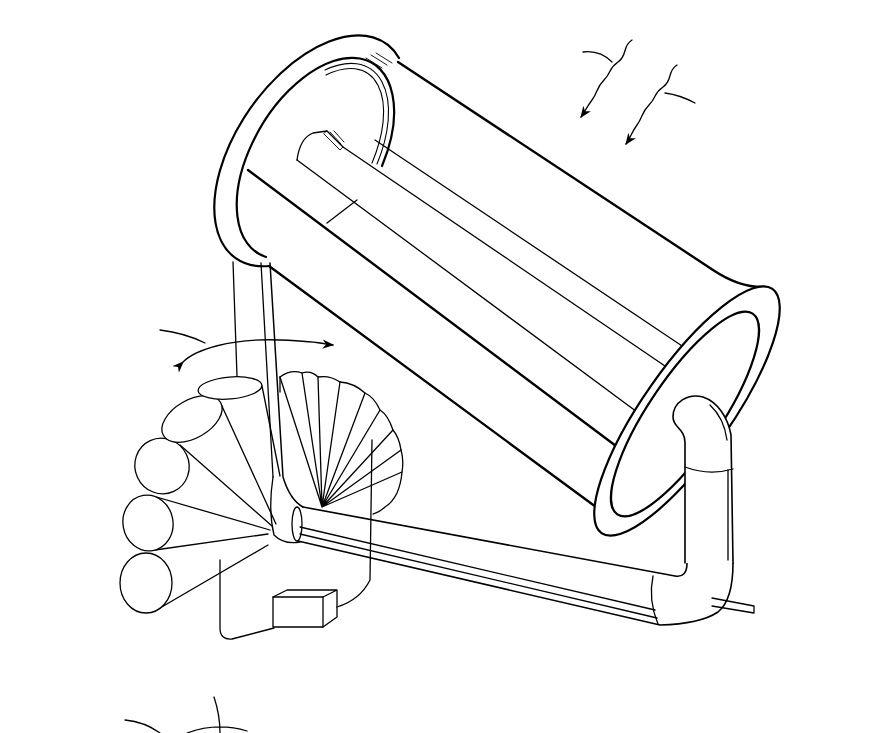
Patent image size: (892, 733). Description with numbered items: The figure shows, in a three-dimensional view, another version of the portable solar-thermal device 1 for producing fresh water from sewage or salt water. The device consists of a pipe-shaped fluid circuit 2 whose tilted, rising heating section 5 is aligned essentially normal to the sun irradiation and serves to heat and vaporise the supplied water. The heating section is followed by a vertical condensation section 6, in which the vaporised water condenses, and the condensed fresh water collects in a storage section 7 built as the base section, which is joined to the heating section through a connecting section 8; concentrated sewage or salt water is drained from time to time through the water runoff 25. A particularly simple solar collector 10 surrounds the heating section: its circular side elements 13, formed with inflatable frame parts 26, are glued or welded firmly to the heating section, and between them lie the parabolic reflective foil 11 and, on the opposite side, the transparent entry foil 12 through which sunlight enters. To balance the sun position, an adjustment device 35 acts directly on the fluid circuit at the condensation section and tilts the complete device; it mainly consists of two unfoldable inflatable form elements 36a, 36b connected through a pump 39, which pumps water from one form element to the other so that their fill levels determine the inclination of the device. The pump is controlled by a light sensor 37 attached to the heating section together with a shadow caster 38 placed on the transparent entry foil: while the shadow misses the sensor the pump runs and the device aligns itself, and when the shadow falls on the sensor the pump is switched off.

The portable solar-thermal device 1 is at (172, 143).
The fluid circuit 2 is at (228, 268).
The heating section 5 is at (612, 345).
The condensation section 6 is at (233, 297).
The storage section 7 is at (487, 557).
The connecting section 8 is at (710, 490).
The solar collector 10 is at (234, 108).
The reflective foil 11 is at (447, 293).
The transparent entry foil 12 is at (670, 240).
The side elements 13 is at (367, 112).
The water runoff 25 is at (745, 593).
The inflatable frame parts 26 is at (288, 77).
The adjustment device 35 is at (142, 430).
The inflatable form element 36a is at (143, 518).
The inflatable form element 36b is at (383, 422).
The light sensor 37 is at (340, 137).
The shadow caster 38 is at (385, 61).
The pump 39 is at (312, 612).